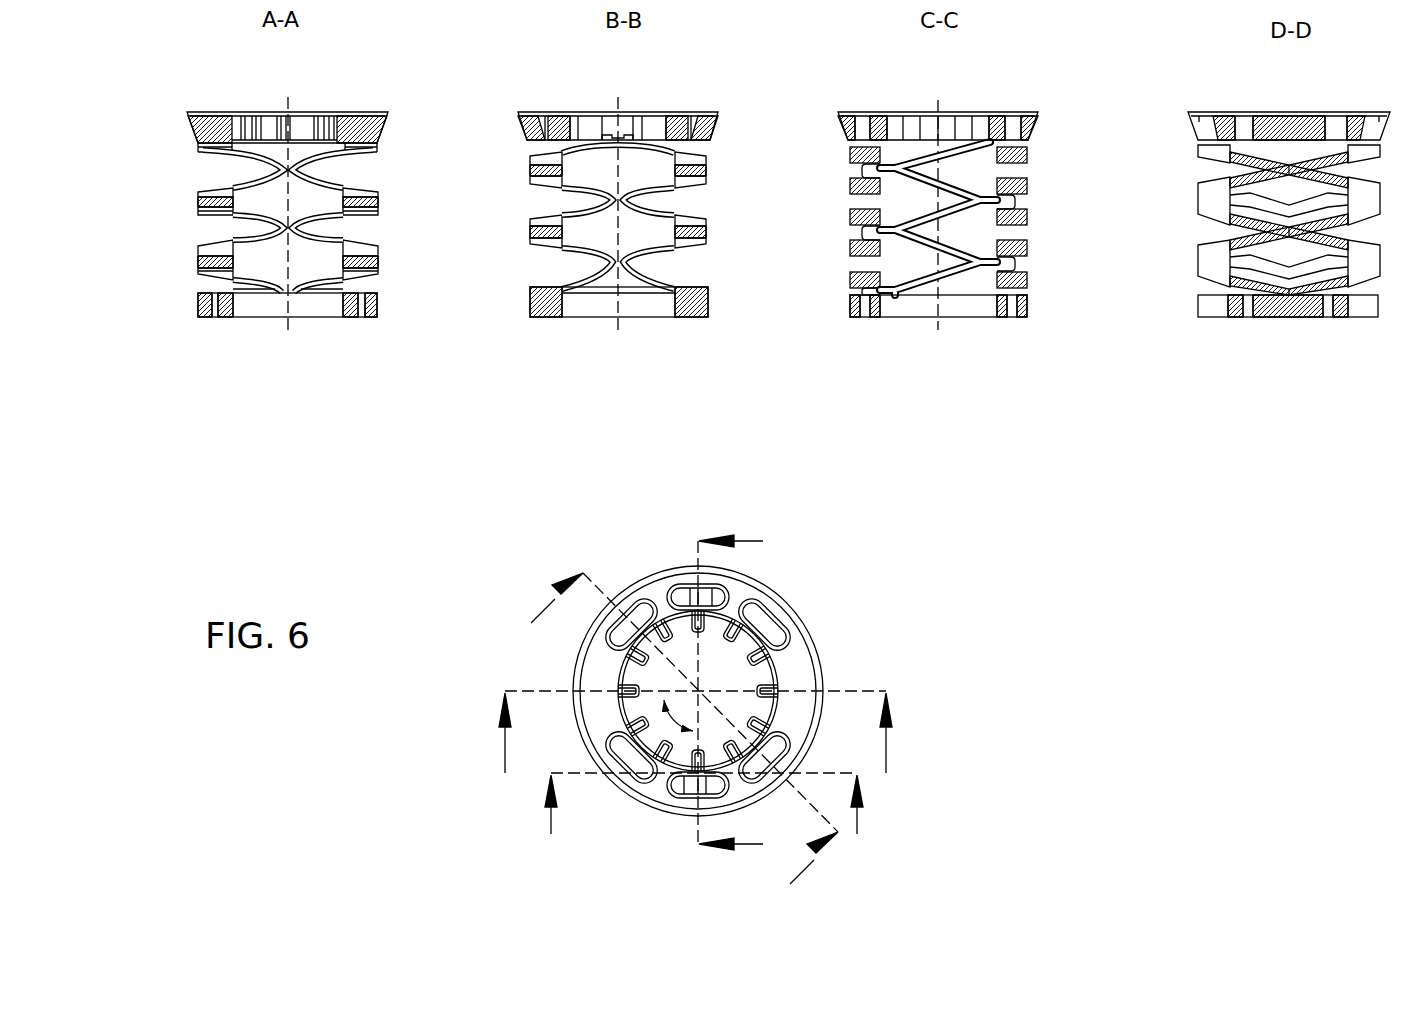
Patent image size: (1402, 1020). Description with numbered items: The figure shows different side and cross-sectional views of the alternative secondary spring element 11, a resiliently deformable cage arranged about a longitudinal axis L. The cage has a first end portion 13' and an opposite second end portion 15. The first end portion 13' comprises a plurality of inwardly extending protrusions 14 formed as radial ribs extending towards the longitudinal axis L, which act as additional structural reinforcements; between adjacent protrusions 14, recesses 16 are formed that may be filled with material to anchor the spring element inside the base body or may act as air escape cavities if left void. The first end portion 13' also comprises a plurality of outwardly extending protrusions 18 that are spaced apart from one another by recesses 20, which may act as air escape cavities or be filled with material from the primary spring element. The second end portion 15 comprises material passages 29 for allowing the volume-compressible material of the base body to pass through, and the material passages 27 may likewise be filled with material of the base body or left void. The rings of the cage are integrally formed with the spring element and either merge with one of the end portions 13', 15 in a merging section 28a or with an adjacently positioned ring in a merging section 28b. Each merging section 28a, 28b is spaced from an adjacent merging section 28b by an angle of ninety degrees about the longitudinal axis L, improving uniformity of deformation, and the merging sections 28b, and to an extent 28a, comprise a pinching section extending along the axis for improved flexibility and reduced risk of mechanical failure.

The secondary spring element 11 is at (642, 555).
The first end portion 13' is at (241, 122).
The inwardly extending protrusions 14 is at (228, 112).
The second end portion 15 is at (198, 303).
The recesses 16 is at (880, 118).
The outwardly extending protrusions 18 is at (1188, 110).
The recesses 20 is at (838, 110).
The material passages 27 is at (540, 118).
The merging section 28a is at (195, 150).
The merging section 28b is at (195, 200).
The material passages 29 is at (215, 320).
The longitudinal axis L is at (293, 95).